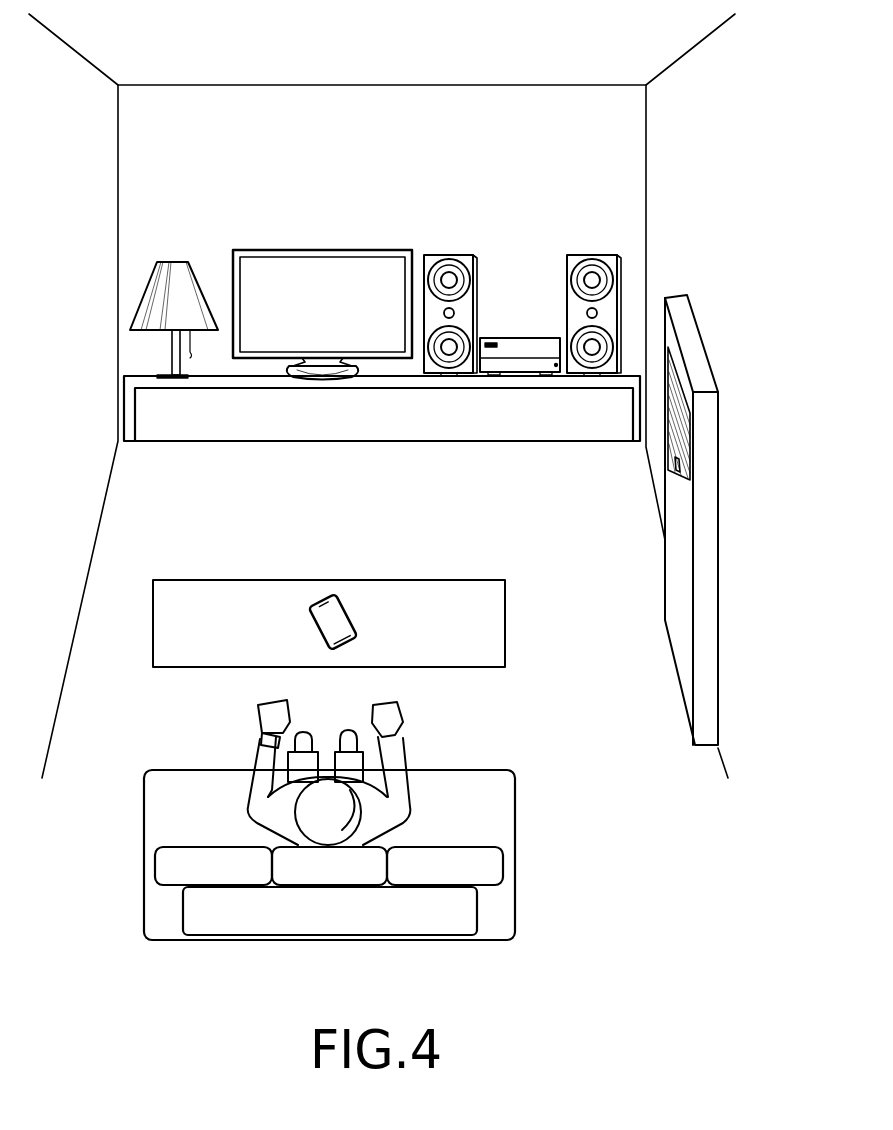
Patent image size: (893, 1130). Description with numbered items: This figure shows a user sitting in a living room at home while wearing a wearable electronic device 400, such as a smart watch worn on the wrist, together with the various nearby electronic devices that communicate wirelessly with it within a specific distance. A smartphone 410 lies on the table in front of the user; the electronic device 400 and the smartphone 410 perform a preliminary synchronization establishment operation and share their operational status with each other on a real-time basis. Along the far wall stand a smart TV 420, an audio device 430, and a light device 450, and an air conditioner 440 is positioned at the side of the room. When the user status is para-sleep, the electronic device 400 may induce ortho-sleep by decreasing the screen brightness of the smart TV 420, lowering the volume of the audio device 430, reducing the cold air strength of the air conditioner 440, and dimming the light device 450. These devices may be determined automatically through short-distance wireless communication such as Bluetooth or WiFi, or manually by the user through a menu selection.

The wearable electronic device 400 is at (208, 712).
The smartphone 410 is at (425, 541).
The smart TV 420 is at (322, 283).
The audio device 430 is at (527, 281).
The air conditioner 440 is at (718, 508).
The light device 450 is at (179, 284).